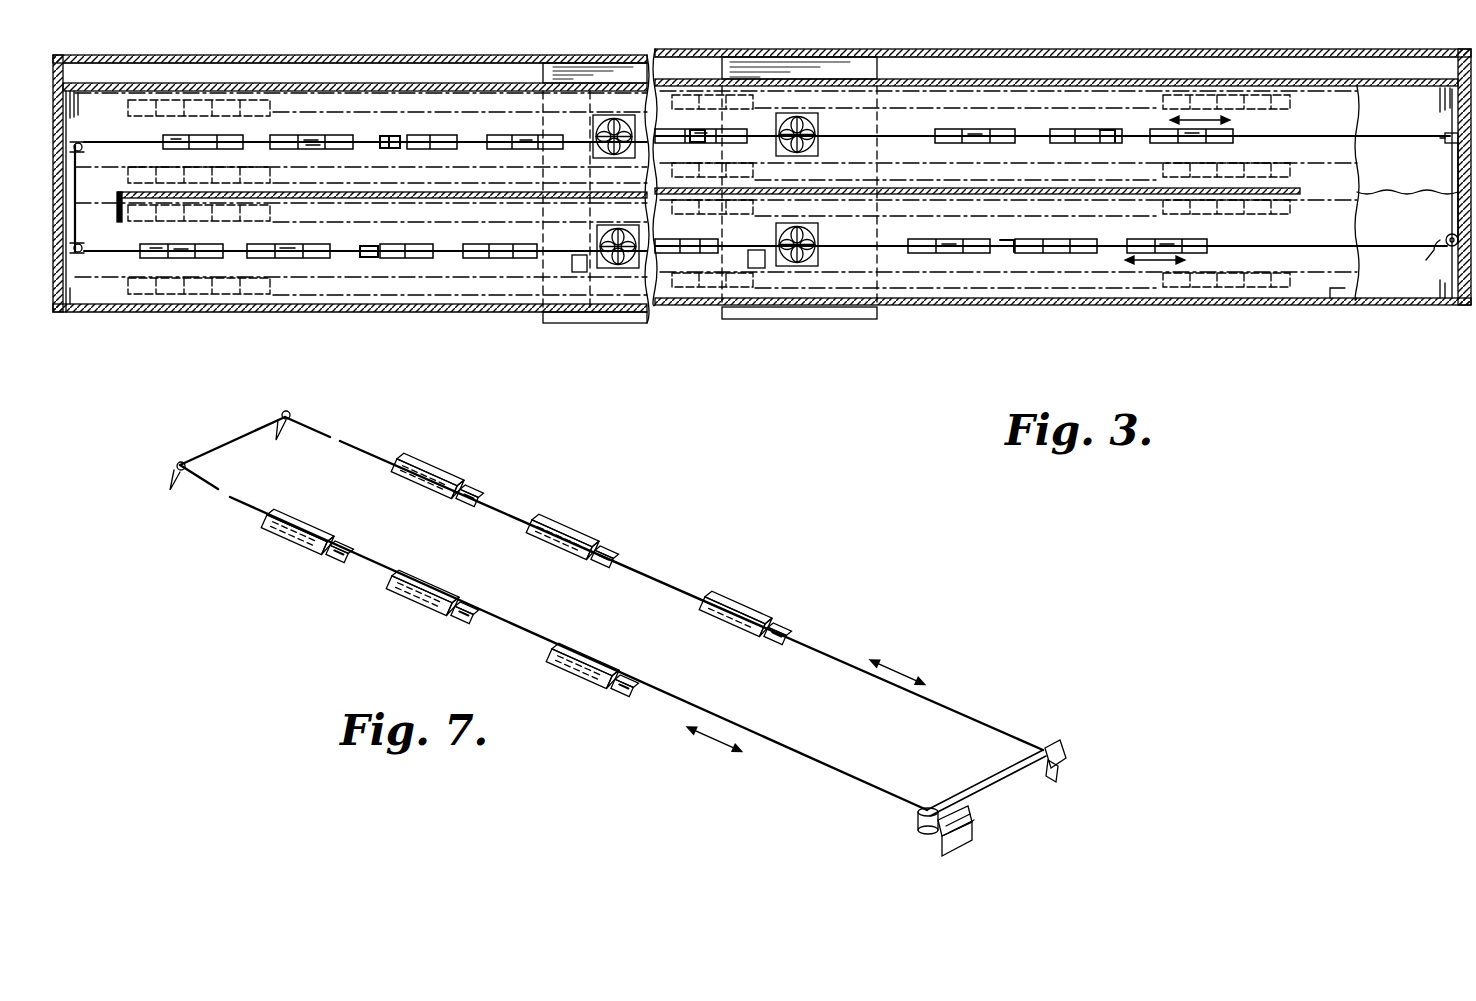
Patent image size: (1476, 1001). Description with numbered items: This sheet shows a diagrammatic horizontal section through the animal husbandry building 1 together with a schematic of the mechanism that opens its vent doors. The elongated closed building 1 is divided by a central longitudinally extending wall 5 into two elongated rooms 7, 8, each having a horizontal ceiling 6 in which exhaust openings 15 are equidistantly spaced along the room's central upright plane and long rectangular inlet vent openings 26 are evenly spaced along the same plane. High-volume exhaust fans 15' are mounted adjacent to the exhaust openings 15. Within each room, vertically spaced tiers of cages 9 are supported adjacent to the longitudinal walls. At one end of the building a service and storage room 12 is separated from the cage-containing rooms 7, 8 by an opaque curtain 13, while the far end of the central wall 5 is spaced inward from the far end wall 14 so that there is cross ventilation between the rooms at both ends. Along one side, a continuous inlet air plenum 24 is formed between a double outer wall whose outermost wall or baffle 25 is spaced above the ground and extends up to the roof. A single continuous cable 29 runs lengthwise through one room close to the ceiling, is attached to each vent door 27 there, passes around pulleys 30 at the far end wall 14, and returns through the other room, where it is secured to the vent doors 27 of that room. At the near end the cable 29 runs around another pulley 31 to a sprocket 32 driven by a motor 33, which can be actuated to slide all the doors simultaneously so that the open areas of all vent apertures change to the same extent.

In FIG. 3, the closed building 1 is at (962, 318).
In FIG. 3, the central wall 5 is at (118, 222).
In FIG. 3, the ceiling 6 is at (802, 102).
In FIG. 3, the room 7 is at (1103, 283).
In FIG. 3, the room 8 is at (1278, 112).
In FIG. 3, the cages 9 is at (363, 226).
In FIG. 3, the service and storage room 12 is at (1383, 294).
In FIG. 3, the opaque curtain 13 is at (1328, 306).
In FIG. 3, the far end wall 14 is at (78, 176).
In FIG. 3, the exhaust openings 15 is at (802, 213).
In FIG. 3, the exhaust fans 15' is at (680, 215).
In FIG. 3, the inlet air plenum 24 is at (1066, 65).
In FIG. 3, the outermost wall or baffle 25 is at (1003, 48).
In FIG. 3, the inlet vent openings 26 is at (380, 150).
In FIG. 7, the inlet vent openings 26 is at (725, 586).
In FIG. 3, the vent doors 27 is at (438, 148).
In FIG. 7, the vent doors 27 is at (564, 642).
In FIG. 3, the cable 29 is at (385, 138).
In FIG. 7, the cable 29 is at (770, 716).
In FIG. 3, the pulleys 30 is at (87, 143).
In FIG. 7, the pulleys 30 is at (289, 423).
In FIG. 3, the pulley 31 is at (1440, 148).
In FIG. 7, the pulley 31 is at (1040, 754).
In FIG. 3, the sprocket 32 is at (1434, 248).
In FIG. 7, the sprocket 32 is at (928, 804).
In FIG. 3, the motor 33 is at (1438, 230).
In FIG. 7, the motor 33 is at (962, 824).